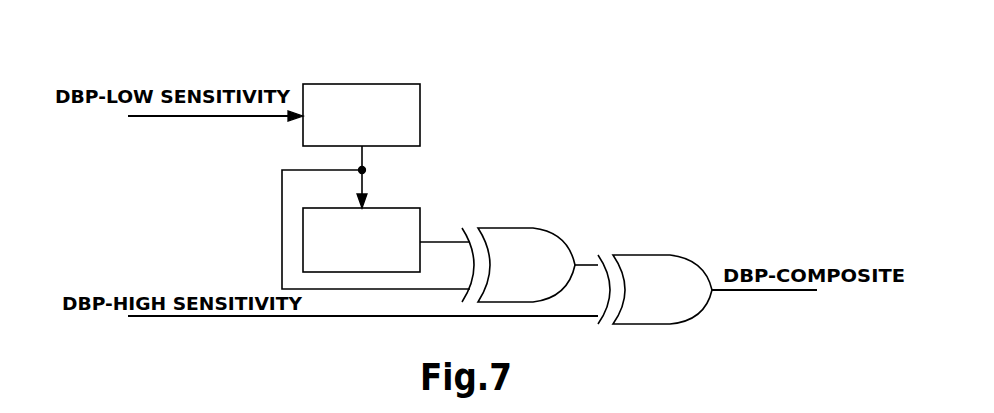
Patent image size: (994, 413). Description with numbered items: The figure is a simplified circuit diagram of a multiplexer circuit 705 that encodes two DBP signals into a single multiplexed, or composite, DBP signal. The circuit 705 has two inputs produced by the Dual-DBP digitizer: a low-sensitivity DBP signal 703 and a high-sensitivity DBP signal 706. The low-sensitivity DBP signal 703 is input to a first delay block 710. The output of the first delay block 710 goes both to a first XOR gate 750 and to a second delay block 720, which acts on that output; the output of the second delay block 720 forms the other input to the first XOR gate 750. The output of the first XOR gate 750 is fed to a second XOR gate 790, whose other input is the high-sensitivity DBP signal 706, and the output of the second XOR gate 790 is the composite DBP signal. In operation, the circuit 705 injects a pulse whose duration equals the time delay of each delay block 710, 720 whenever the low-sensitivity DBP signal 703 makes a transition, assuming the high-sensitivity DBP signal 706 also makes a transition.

The multiplexer circuit 705 is at (590, 117).
The low-sensitivity DBP signal 703 is at (210, 117).
The high-sensitivity DBP signal 706 is at (246, 318).
The first delay block 710 is at (421, 98).
The second delay block 720 is at (421, 214).
The first XOR gate 750 is at (557, 214).
The second XOR gate 790 is at (652, 255).